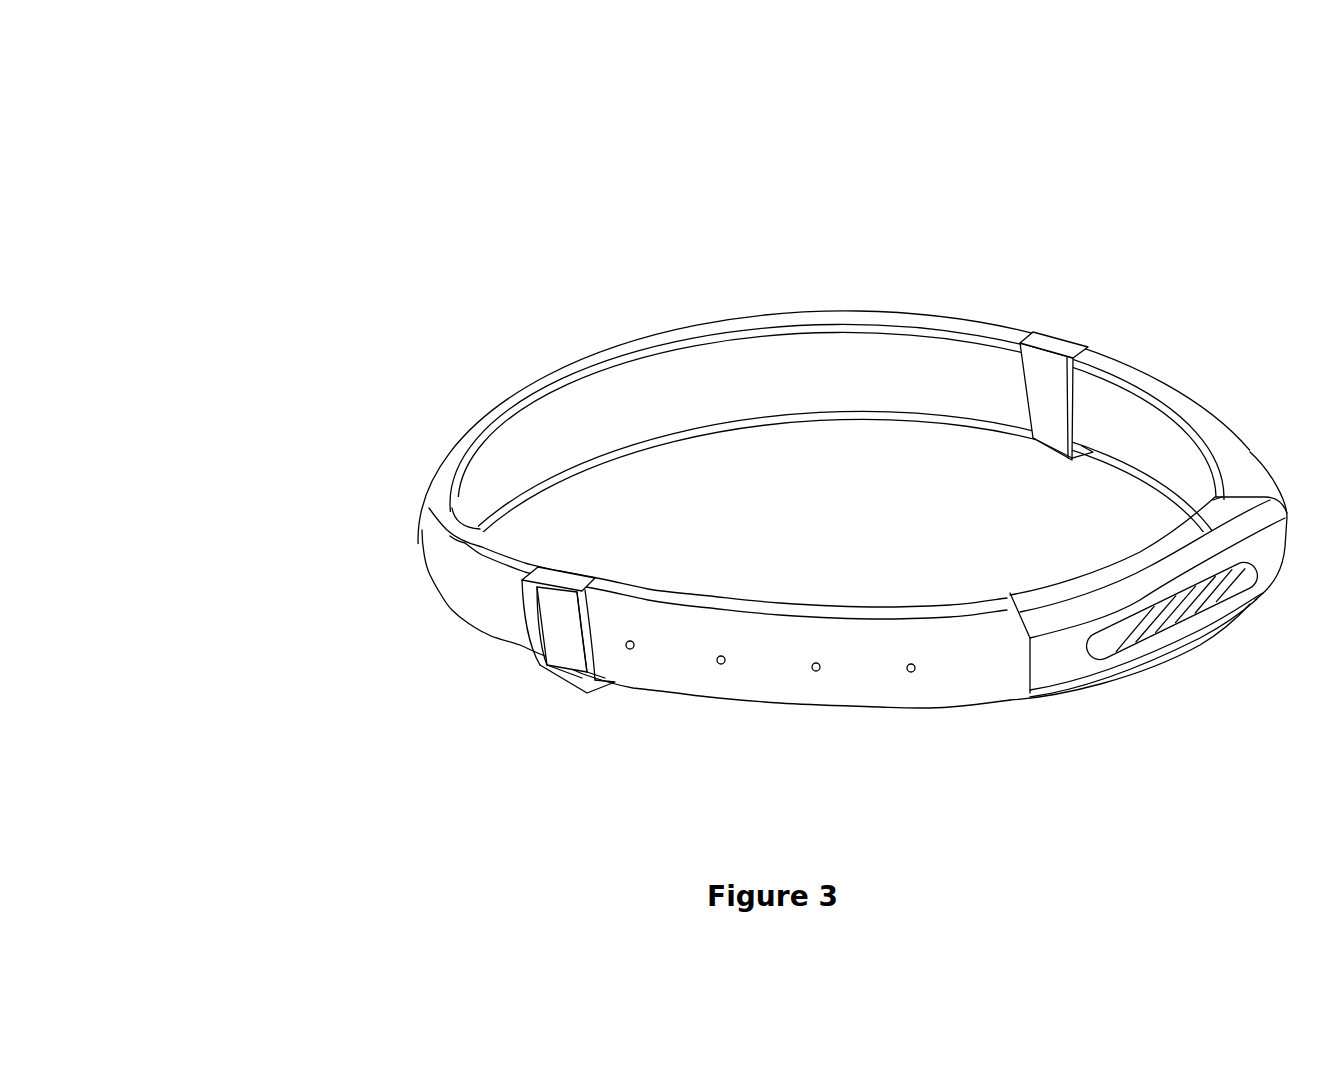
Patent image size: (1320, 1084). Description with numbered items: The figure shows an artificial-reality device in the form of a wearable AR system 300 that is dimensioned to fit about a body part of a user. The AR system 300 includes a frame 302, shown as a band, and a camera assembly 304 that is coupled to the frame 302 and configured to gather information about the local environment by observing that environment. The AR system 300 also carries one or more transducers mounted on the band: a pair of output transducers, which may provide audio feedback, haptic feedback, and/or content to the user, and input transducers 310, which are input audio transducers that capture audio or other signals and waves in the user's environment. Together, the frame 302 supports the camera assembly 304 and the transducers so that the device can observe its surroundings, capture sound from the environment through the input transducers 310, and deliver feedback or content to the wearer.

The AR system 300 is at (366, 124).
The frame 302 is at (808, 312).
The camera assembly 304 is at (1170, 648).
The input transducers 310 is at (912, 716).